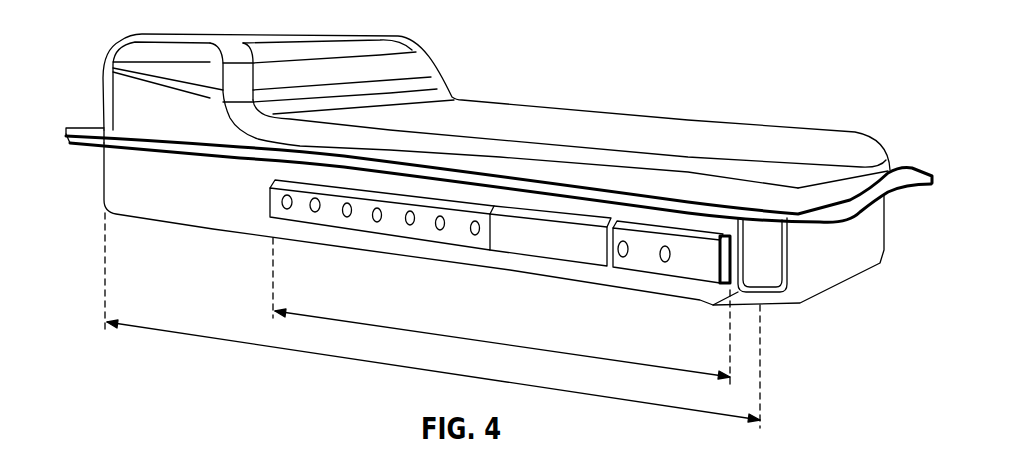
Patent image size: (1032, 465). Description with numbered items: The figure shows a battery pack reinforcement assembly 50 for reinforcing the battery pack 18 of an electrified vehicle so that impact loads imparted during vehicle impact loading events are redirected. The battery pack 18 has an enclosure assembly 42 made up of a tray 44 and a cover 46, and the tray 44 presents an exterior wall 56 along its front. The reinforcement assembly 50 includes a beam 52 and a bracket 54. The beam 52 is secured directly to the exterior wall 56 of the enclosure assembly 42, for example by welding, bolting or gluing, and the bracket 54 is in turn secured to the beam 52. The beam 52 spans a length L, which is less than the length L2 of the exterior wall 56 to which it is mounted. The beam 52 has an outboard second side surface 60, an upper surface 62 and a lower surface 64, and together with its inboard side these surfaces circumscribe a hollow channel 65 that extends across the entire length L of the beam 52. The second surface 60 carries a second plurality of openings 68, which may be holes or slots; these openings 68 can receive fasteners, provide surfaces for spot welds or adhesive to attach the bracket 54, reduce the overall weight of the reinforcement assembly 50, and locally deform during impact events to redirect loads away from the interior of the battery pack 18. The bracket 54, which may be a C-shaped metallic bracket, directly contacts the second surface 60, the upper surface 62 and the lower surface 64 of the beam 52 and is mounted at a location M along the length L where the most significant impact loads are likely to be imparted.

The battery pack 18 is at (594, 83).
The enclosure assembly 42 is at (97, 93).
The tray 44 is at (106, 177).
The cover 46 is at (110, 53).
The reinforcement assembly 50 is at (481, 200).
The beam 52 is at (423, 230).
The bracket 54 is at (554, 232).
The exterior wall 56 is at (257, 201).
The second side surface 60 is at (328, 216).
The upper surface 62 is at (667, 219).
The lower surface 64 is at (730, 258).
The hollow channel 65 is at (740, 256).
The second plurality of openings 68 is at (417, 226).
The location M is at (544, 203).
The length L is at (504, 347).
The length of the exterior wall L2 is at (436, 374).